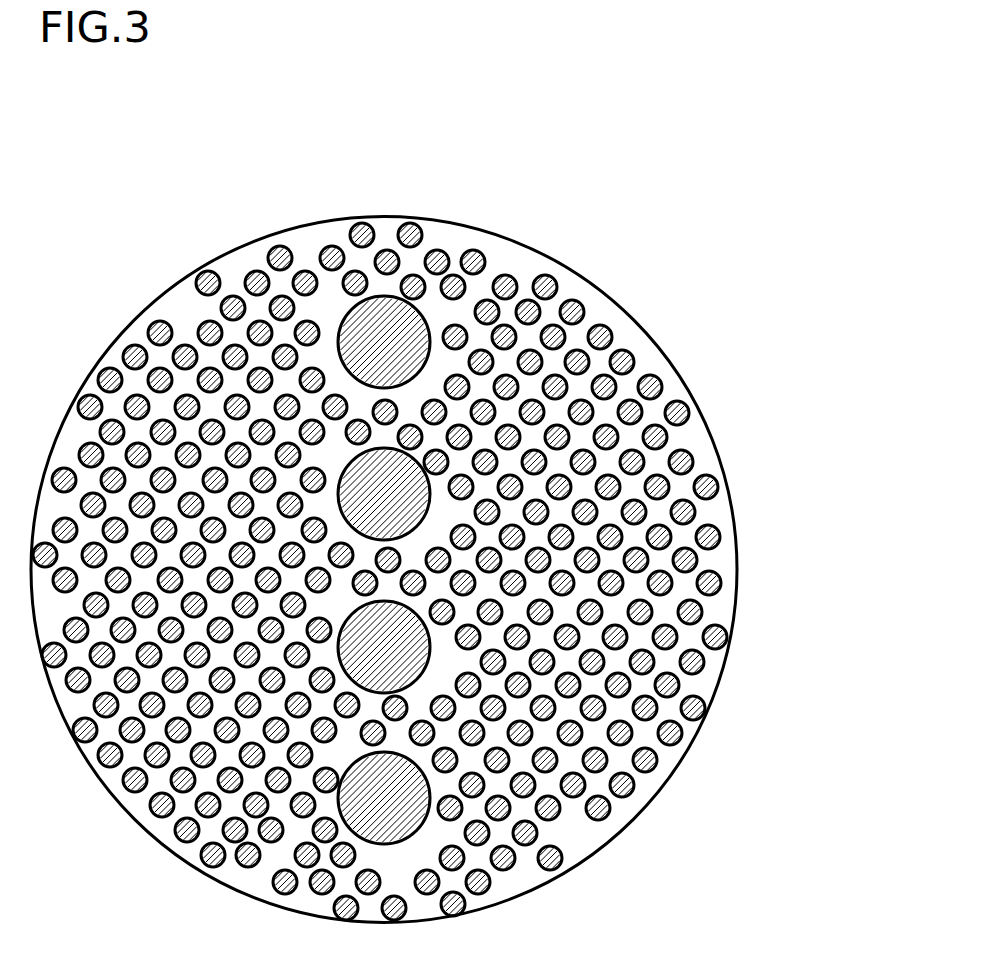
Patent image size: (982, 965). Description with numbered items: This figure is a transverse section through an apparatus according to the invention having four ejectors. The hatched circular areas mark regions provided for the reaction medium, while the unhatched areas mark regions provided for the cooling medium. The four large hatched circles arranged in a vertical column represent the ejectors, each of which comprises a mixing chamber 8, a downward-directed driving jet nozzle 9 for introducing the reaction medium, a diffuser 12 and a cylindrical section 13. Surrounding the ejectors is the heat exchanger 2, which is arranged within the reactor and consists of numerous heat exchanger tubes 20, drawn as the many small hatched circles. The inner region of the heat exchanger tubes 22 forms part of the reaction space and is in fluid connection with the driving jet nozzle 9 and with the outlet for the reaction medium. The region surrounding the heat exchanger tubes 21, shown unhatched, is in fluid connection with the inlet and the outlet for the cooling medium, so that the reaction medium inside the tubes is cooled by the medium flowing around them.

The mixing chamber 8 is at (510, 533).
The downward-directed driving jet nozzle 9 is at (510, 533).
The diffuser 12 is at (510, 533).
The cylindrical section 13 is at (407, 330).
The heat exchanger 2 is at (695, 339).
The heat exchanger tubes 20 is at (640, 358).
The region surrounding the heat exchanger tubes 21 is at (718, 566).
The inner region of the heat exchanger tubes 22 is at (677, 413).